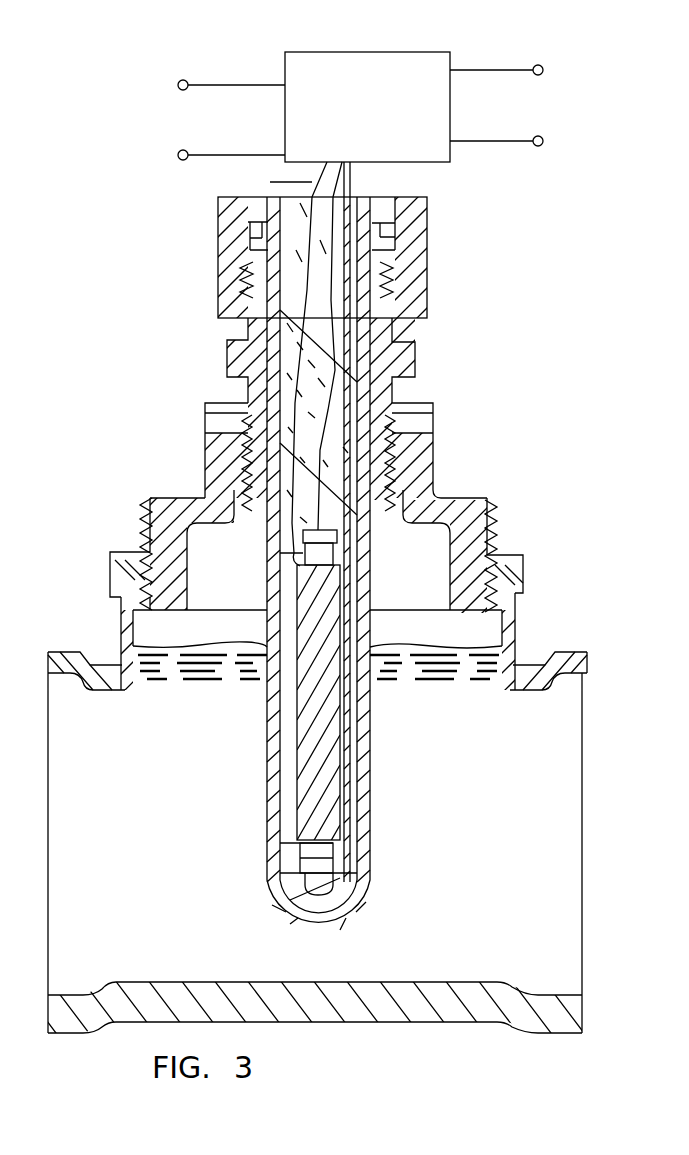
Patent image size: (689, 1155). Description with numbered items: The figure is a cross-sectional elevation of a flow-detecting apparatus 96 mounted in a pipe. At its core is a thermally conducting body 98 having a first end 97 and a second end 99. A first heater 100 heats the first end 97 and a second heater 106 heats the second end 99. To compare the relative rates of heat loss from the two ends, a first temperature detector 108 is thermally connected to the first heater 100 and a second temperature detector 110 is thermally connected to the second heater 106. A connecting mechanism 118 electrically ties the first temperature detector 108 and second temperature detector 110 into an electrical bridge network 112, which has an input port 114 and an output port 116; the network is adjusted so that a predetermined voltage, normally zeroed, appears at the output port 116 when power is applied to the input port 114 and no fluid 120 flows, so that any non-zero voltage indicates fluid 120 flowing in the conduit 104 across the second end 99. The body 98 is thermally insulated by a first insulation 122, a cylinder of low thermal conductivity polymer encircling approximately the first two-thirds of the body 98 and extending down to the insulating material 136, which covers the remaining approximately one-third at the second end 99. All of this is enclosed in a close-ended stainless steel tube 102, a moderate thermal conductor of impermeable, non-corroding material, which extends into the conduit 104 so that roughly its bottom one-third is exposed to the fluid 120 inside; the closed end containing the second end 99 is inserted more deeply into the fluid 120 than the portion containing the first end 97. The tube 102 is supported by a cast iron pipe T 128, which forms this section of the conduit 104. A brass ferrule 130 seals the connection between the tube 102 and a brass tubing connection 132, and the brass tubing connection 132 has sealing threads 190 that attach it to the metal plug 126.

The apparatus 96 is at (99, 519).
The first end 97 is at (313, 563).
The thermally conducting body 98 is at (303, 773).
The second end 99 is at (297, 847).
The first heater 100 is at (333, 552).
The close-ended stainless steel tube 102 is at (351, 806).
The conduit 104 is at (362, 1027).
The second heater 106 is at (297, 855).
The first temperature detector 108 is at (337, 538).
The second temperature detector 110 is at (270, 880).
The electrical bridge network 112 is at (367, 65).
The input port 114 is at (241, 122).
The output port 116 is at (470, 107).
The mechanism for electrically connecting 118 is at (261, 186).
The fluid 120 is at (118, 845).
The first insulation 122 is at (340, 328).
The metal plug 126 is at (493, 538).
The cast iron pipe T 128 is at (110, 573).
The brass ferrule 130 is at (392, 250).
The brass tubing connection 132 is at (225, 357).
The insulating material 136 is at (270, 787).
The sealing threads 190 is at (192, 455).